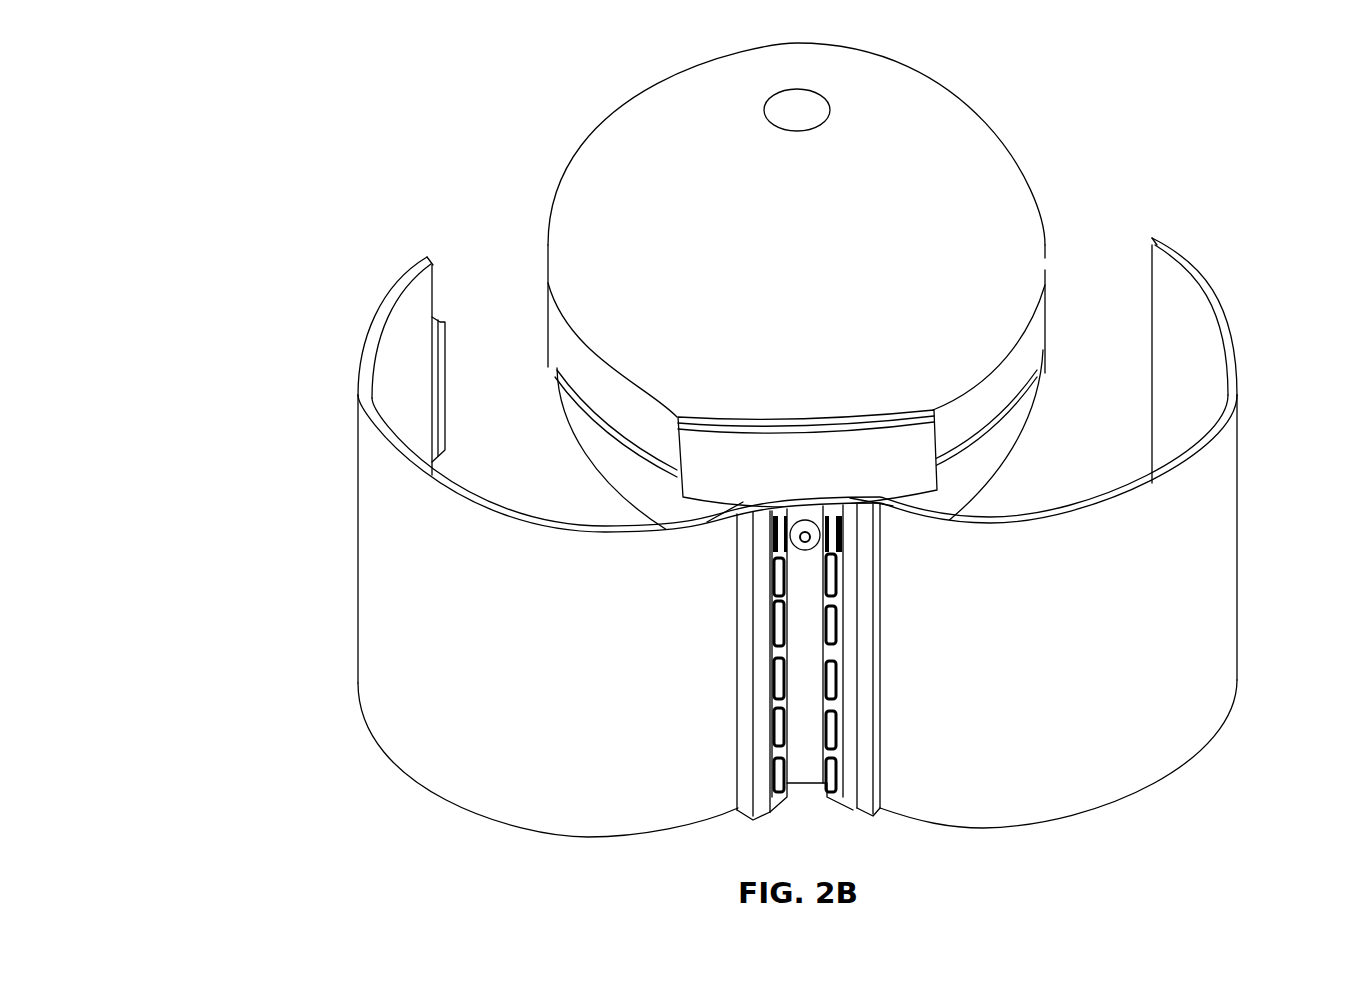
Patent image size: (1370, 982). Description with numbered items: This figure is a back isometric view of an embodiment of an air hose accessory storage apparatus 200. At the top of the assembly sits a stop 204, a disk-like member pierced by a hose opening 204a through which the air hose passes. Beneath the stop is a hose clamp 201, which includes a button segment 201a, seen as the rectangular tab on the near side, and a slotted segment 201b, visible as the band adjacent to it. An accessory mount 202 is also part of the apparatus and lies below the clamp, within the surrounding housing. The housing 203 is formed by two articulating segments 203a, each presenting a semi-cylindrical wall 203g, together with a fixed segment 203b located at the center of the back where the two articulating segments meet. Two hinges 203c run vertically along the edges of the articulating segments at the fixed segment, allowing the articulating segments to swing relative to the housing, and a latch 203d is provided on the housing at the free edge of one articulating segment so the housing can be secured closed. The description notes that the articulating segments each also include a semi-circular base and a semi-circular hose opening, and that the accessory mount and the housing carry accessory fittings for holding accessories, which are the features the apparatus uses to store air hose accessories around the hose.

The air hose accessory storage apparatus 200 is at (286, 95).
The hose clamp 201 is at (548, 300).
The button segment 201a is at (823, 482).
The slotted segment 201b is at (668, 436).
The accessory mount 202 is at (1017, 450).
The housing 203 is at (1235, 570).
The articulating segments 203a is at (358, 560).
The fixed segment 203b is at (805, 766).
The hinges 203c is at (880, 632).
The latch 203d is at (445, 392).
The semi-cylindrical wall 203g is at (527, 666).
The stop 204 is at (818, 254).
The hose opening 204a is at (820, 127).